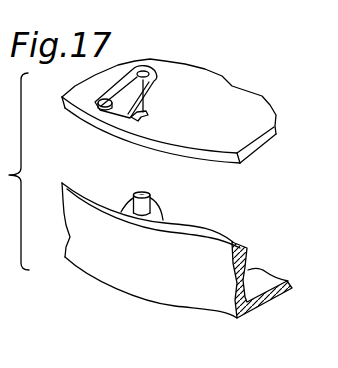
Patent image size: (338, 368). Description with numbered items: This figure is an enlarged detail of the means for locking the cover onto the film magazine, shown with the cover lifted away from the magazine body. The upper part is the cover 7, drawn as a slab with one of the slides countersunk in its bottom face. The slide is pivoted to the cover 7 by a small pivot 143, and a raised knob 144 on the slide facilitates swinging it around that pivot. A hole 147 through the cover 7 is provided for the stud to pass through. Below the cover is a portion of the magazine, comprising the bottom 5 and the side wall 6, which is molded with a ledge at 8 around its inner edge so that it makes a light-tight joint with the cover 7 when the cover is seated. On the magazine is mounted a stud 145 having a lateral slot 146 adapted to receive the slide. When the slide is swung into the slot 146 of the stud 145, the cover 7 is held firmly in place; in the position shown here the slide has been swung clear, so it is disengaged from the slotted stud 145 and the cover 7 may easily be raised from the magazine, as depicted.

The bottom 5 is at (271, 300).
The side wall 6 is at (148, 287).
The cover 7 is at (232, 84).
The ledge 8 is at (238, 243).
The pivot 143 is at (141, 72).
The raised knob 144 is at (100, 105).
The stud 145 is at (150, 197).
The lateral slot 146 is at (135, 207).
The hole 147 is at (149, 113).